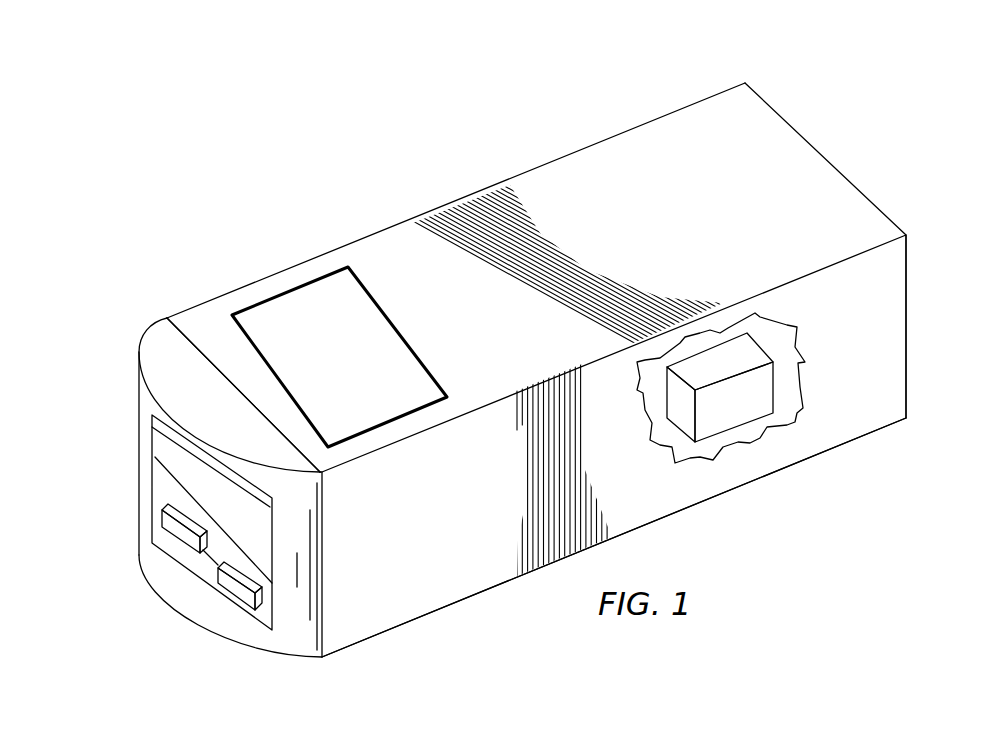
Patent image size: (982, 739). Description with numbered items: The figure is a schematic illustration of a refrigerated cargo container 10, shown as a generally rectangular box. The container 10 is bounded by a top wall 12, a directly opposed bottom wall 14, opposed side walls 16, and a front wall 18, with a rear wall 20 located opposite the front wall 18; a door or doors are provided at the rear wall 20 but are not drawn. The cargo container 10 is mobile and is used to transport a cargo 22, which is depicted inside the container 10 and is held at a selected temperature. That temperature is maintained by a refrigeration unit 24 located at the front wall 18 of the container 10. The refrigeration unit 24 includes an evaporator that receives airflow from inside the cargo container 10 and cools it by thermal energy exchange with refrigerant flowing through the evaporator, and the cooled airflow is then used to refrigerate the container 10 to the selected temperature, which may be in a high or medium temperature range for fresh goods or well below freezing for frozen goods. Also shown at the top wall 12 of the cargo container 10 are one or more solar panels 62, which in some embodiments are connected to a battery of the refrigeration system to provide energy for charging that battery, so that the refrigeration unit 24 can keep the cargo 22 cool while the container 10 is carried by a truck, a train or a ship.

The refrigerated cargo container 10 is at (549, 188).
The top wall 12 is at (396, 250).
The bottom wall 14 is at (493, 586).
The side walls 16 is at (450, 525).
The front wall 18 is at (216, 368).
The rear wall 20 is at (908, 300).
The cargo 22 is at (746, 418).
The refrigeration unit 24 is at (200, 578).
The solar panels 62 is at (339, 375).